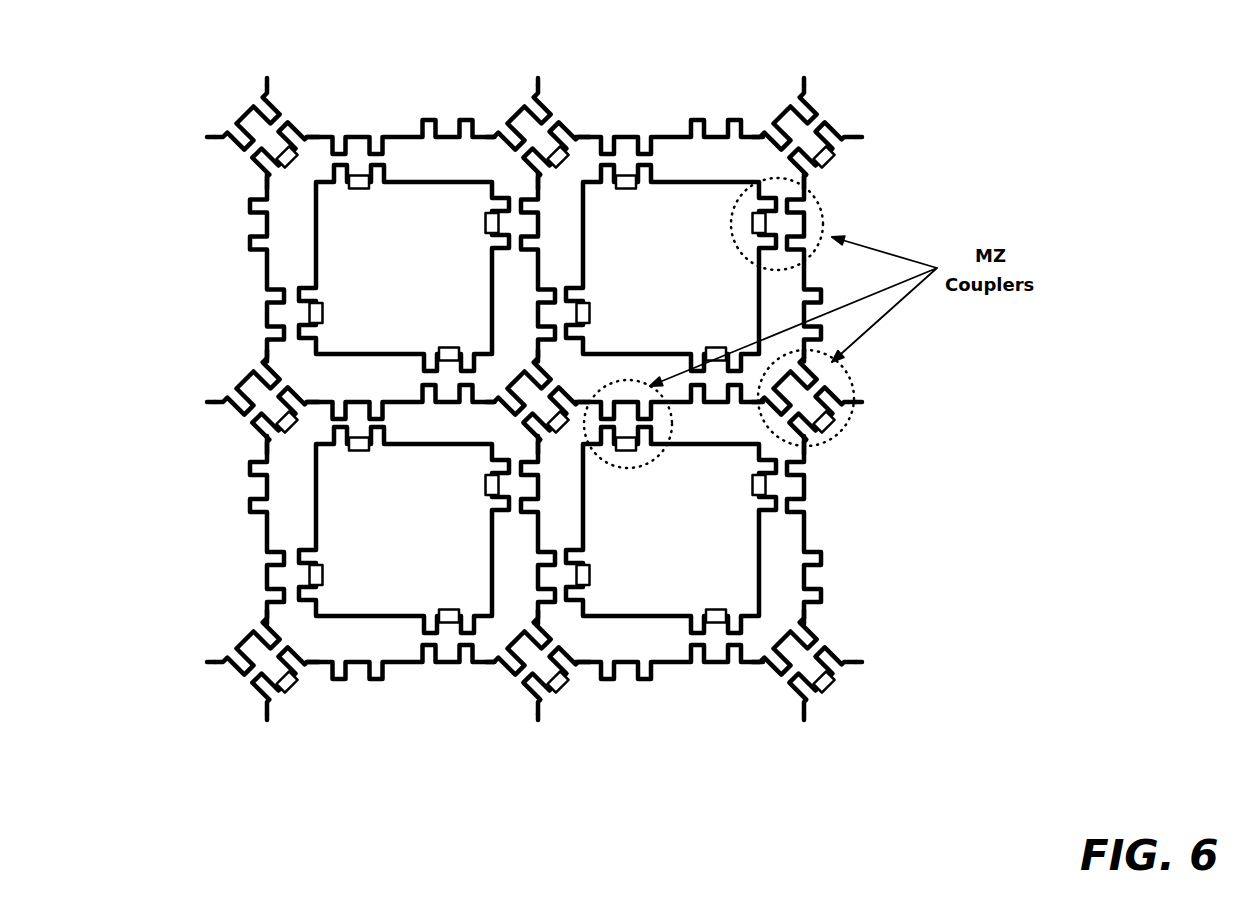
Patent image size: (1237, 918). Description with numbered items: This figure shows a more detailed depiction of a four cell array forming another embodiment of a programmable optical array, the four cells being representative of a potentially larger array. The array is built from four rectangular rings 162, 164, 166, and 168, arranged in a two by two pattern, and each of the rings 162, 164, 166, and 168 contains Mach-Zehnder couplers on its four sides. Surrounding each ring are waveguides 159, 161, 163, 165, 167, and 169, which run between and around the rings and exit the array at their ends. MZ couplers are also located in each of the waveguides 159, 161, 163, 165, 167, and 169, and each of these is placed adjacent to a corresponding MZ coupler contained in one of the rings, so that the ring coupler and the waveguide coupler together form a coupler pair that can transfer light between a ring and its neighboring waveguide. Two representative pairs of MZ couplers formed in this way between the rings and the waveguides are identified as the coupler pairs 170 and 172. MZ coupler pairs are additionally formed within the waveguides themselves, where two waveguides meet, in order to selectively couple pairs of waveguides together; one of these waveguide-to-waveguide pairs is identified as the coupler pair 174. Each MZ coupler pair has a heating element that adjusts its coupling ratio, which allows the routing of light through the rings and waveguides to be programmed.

The waveguide 159 is at (805, 720).
The waveguide 161 is at (848, 410).
The rectangular ring 162 is at (490, 268).
The waveguide 163 is at (862, 137).
The rectangular ring 164 is at (757, 272).
The waveguide 165 is at (805, 78).
The rectangular ring 166 is at (490, 530).
The waveguide 167 is at (540, 78).
The rectangular ring 168 is at (757, 548).
The waveguide 169 is at (270, 80).
The MZ coupler pair 170 is at (828, 206).
The MZ coupler pair 172 is at (633, 470).
The MZ coupler pair 174 is at (854, 394).